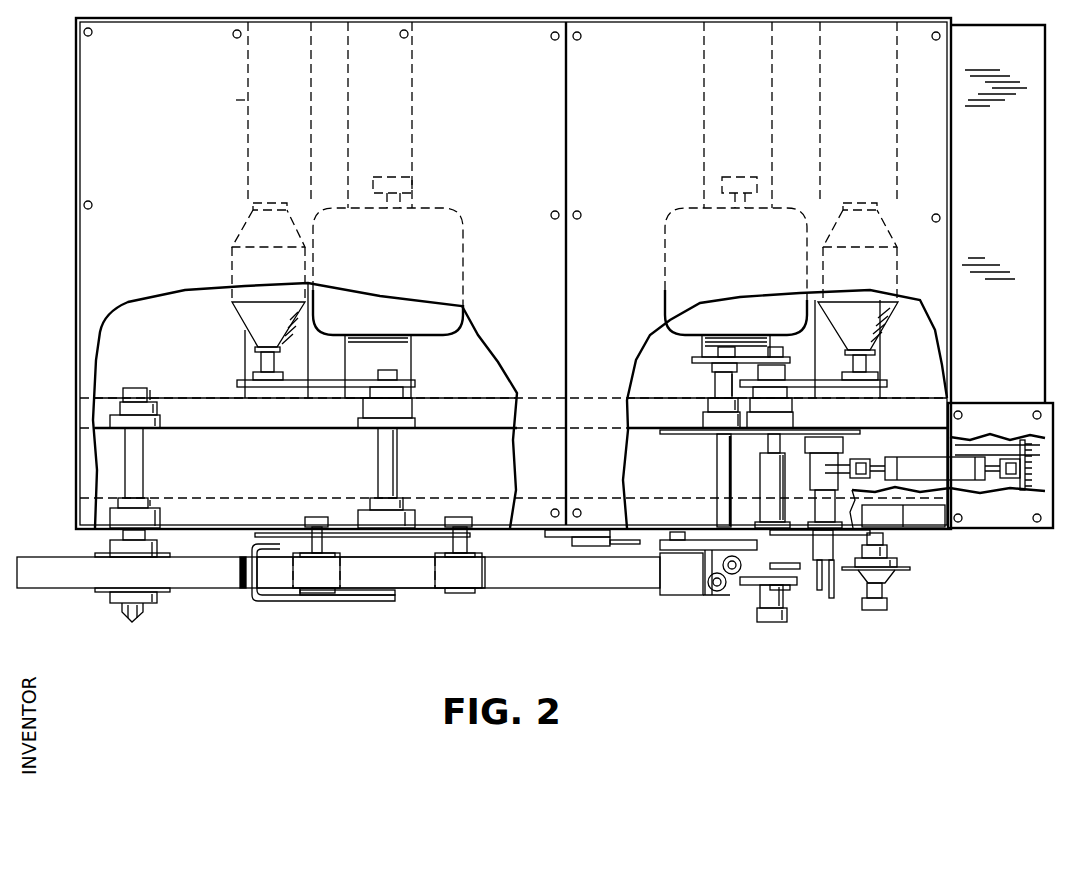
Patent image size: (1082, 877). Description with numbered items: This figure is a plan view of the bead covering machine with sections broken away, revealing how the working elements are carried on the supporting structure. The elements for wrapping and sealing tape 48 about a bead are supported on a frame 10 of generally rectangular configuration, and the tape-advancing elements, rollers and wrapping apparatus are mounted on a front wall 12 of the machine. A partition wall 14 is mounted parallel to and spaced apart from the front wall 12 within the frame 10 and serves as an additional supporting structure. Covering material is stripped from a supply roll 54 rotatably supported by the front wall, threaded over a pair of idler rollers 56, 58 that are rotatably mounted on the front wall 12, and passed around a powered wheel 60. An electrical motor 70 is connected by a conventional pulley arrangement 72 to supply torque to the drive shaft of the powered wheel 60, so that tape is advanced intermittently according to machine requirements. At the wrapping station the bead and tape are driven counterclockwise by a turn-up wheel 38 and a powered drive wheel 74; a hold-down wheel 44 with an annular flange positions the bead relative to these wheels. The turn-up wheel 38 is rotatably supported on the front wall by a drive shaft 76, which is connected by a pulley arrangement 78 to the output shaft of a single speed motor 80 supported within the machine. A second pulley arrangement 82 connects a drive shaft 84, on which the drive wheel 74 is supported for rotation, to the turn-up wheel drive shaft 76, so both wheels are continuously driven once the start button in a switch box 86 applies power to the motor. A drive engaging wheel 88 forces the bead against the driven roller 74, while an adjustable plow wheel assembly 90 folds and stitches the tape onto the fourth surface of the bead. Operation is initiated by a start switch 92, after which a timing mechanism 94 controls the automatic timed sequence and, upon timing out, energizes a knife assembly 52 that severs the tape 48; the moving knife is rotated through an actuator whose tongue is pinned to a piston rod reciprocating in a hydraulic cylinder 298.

The frame 10 is at (1045, 193).
The front wall 12 is at (497, 528).
The partition wall 14 is at (885, 434).
The turn-up wheel 38 is at (800, 592).
The hold-down wheel 44 is at (903, 568).
The tape 48 is at (210, 590).
The knife assembly 52 is at (833, 598).
The supply roll 54 is at (73, 590).
The idler roller 56 is at (300, 590).
The idler roller 58 is at (480, 593).
The powered wheel 60 is at (415, 596).
The electrical motor 70 is at (245, 320).
The pulley arrangement 72 is at (340, 388).
The powered drive wheel 74 is at (740, 592).
The drive shaft 76 is at (790, 440).
The pulley arrangement 78 is at (893, 386).
The single speed motor 80 is at (795, 328).
The second pulley arrangement 82 is at (690, 359).
The drive shaft 84 is at (718, 474).
The switch box 86 is at (930, 522).
The drive engaging wheel 88 is at (675, 588).
The plow wheel assembly 90 is at (720, 572).
The start switch 92 is at (617, 547).
The timing mechanism 94 is at (557, 537).
The hydraulic cylinder 298 is at (962, 468).